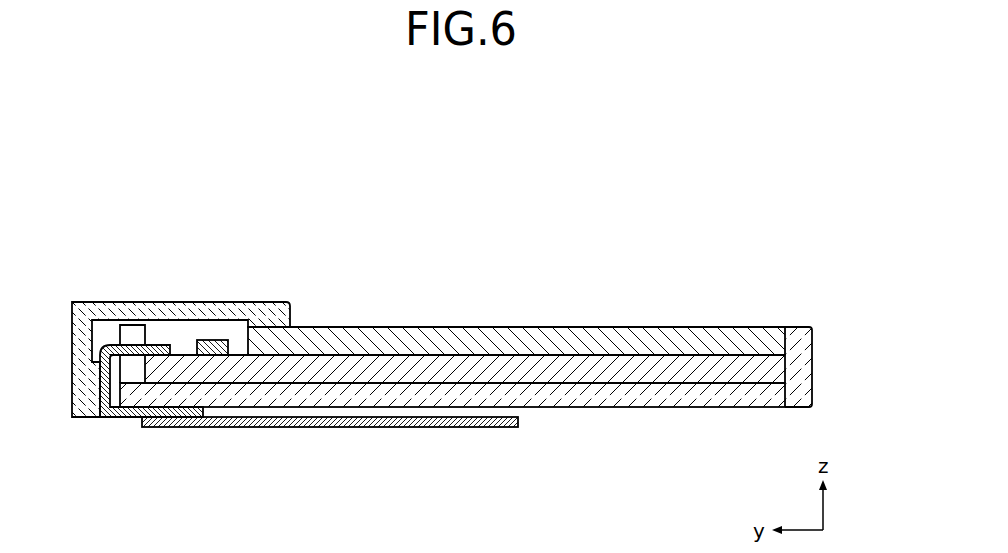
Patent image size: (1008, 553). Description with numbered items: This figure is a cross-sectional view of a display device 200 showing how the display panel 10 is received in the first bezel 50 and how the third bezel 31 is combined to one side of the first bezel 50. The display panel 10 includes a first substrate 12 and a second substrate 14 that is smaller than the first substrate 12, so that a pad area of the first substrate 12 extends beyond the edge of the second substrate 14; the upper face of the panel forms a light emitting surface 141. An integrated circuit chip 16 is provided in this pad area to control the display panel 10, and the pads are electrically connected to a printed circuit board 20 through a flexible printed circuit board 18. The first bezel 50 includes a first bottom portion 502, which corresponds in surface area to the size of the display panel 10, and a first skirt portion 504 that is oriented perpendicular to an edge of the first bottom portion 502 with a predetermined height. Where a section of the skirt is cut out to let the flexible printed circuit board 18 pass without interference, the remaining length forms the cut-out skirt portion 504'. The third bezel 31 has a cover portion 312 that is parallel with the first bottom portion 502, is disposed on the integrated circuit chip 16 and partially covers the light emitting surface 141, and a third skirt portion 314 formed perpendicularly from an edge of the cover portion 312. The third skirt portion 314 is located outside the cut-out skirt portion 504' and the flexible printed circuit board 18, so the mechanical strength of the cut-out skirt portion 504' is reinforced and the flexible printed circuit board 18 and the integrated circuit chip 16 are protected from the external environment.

The display device 200 is at (425, 180).
The display panel 10 is at (447, 299).
The first substrate 12 is at (597, 372).
The second substrate 14 is at (640, 345).
The light emitting surface 141 is at (477, 327).
The integrated circuit chip 16 is at (209, 340).
The flexible printed circuit board 18 is at (130, 417).
The printed circuit board 20 is at (248, 428).
The third bezel 31 is at (75, 418).
The cover portion 312 is at (133, 310).
The third skirt portion 314 is at (71, 343).
The first bezel 50 is at (495, 371).
The first bottom portion 502 is at (692, 379).
The first skirt portion 504 is at (807, 333).
The cut-out skirt portion 504' is at (151, 414).